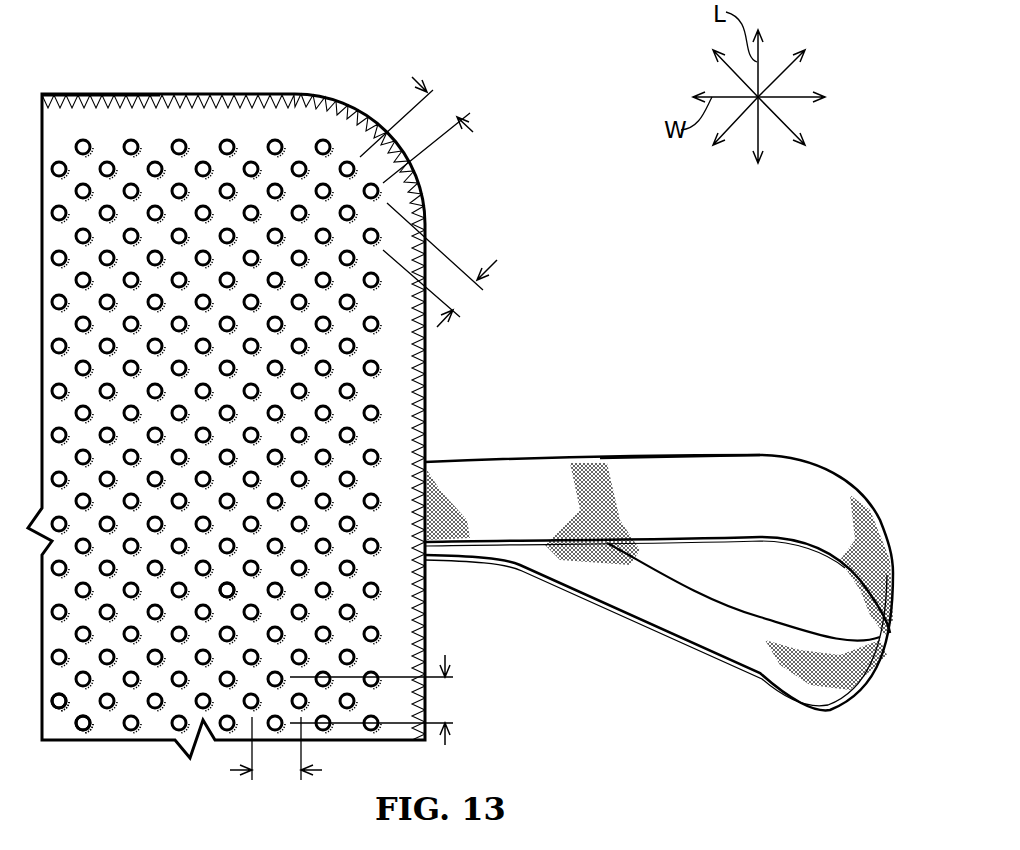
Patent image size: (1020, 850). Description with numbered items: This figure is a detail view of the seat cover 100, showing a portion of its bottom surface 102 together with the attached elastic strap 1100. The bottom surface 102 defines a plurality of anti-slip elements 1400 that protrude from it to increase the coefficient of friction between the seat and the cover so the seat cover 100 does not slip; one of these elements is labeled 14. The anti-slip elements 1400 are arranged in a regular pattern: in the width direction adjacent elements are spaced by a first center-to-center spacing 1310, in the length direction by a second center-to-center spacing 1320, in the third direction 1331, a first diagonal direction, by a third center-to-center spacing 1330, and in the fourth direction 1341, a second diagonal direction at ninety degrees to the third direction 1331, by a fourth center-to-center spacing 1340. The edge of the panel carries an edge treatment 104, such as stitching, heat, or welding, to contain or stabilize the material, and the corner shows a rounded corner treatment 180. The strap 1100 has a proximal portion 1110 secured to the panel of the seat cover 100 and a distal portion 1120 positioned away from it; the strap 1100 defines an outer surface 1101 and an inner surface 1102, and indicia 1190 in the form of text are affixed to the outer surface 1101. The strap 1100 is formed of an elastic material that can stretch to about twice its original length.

The seat cover 100 is at (522, 163).
The bottom surface 102 is at (153, 128).
The edge treatment 104 is at (92, 95).
The corner treatment 180 is at (358, 118).
The apertures 14 is at (220, 589).
The anti-slip elements 1400 is at (80, 729).
The third center-to-center spacing 1330 is at (440, 103).
The fourth center-to-center spacing 1340 is at (467, 293).
The second center-to-center spacing 1320 is at (447, 700).
The first center-to-center spacing 1310 is at (275, 773).
The fourth direction 1341 is at (790, 67).
The third direction 1331 is at (783, 122).
The elastic strap 1100 is at (700, 630).
The proximal portion 1110 is at (437, 473).
The indicia 1190 is at (670, 463).
The outer surface 1101 is at (817, 497).
The distal portion 1120 is at (877, 507).
The inner surface 1102 is at (775, 668).